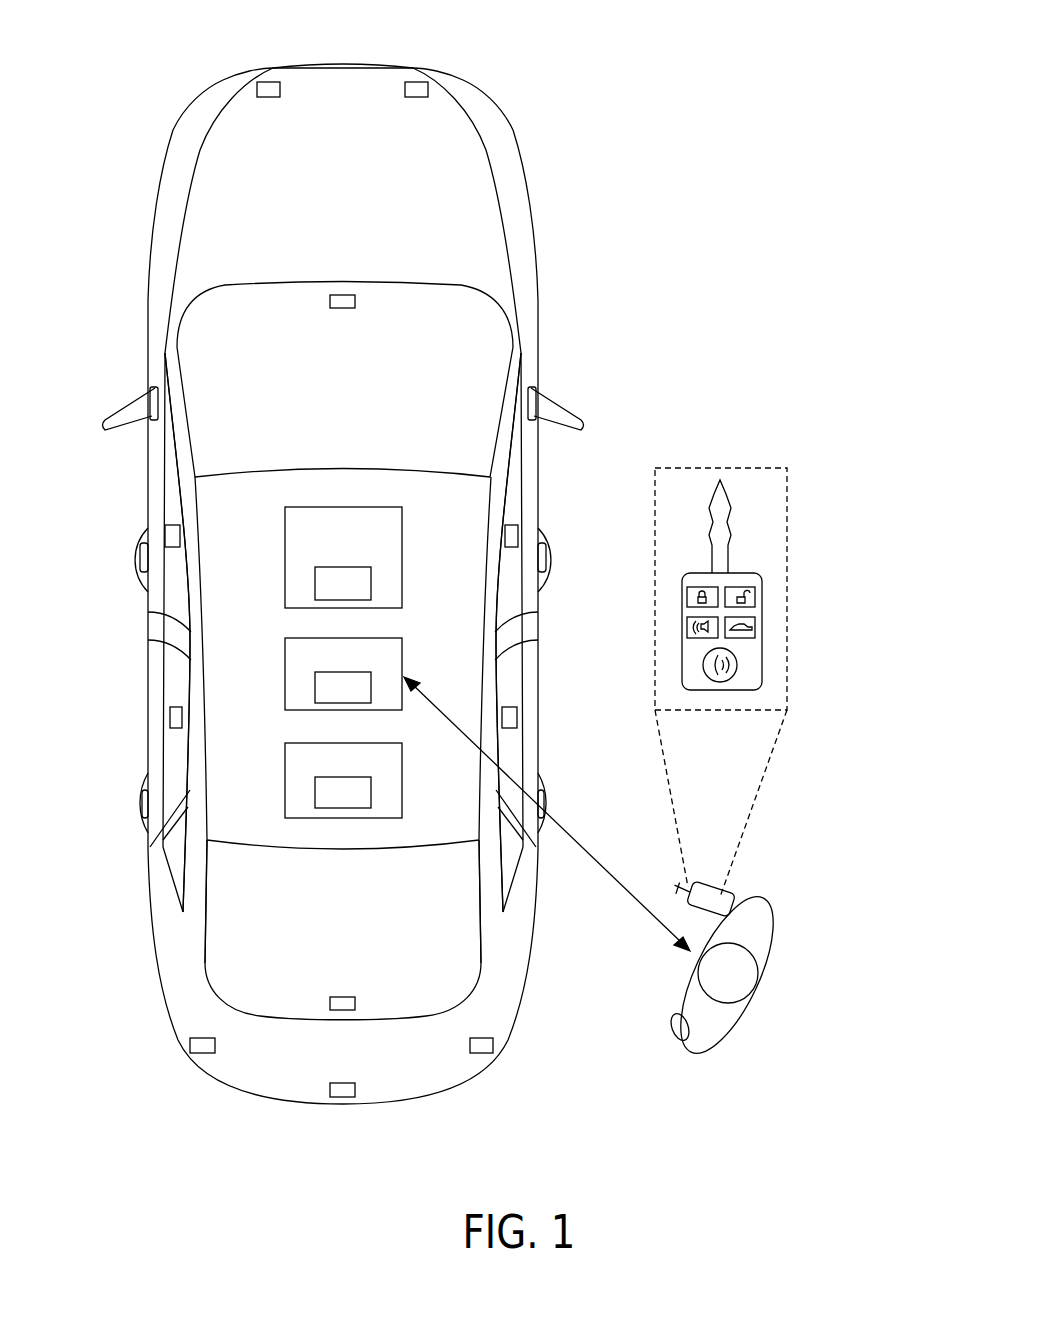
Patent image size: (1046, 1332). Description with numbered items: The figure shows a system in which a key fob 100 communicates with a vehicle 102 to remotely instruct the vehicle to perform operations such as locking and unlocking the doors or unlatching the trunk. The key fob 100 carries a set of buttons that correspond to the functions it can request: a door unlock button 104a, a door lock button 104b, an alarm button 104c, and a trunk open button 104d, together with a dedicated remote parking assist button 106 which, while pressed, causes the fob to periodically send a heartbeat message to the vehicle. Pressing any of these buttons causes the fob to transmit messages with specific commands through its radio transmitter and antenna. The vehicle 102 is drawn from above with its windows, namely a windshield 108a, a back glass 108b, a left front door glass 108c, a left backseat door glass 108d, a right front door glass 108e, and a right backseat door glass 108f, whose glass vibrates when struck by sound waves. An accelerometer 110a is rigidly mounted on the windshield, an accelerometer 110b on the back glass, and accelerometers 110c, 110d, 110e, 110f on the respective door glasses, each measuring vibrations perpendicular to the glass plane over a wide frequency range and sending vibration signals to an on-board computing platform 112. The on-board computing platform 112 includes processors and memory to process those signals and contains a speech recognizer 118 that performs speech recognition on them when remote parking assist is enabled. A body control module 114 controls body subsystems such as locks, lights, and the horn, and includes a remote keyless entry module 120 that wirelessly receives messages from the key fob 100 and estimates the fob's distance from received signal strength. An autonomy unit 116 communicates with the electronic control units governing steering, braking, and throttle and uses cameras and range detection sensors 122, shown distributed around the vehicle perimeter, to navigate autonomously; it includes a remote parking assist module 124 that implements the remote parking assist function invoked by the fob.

The key fob 100 is at (762, 665).
The vehicle 102 is at (497, 118).
The door unlock button 104a is at (755, 597).
The door lock button 104b is at (687, 597).
The alarm button 104c is at (687, 627).
The trunk open button 104d is at (755, 627).
The remote parking assist (RePA) button 106 is at (720, 690).
The windshield 108a is at (413, 310).
The back glass 108b is at (447, 950).
The left front door glass 108c is at (172, 483).
The left backseat door glass 108d is at (175, 675).
The right front door glass 108e is at (513, 483).
The right backseat door glass 108f is at (510, 675).
The accelerometer 110a is at (342, 295).
The accelerometer 110b is at (342, 997).
The accelerometer 110c is at (165, 537).
The accelerometer 110d is at (170, 720).
The accelerometer 110e is at (518, 537).
The accelerometer 110f is at (517, 720).
The on-board computing platform 112 is at (314, 780).
The body control module 114 is at (314, 674).
The autonomy unit 116 is at (314, 557).
The speech recognizer 118 is at (323, 804).
The remote keyless entry module 120 is at (323, 699).
The range detection sensors 122 is at (268, 82).
The remote parking assist module 124 is at (323, 594).